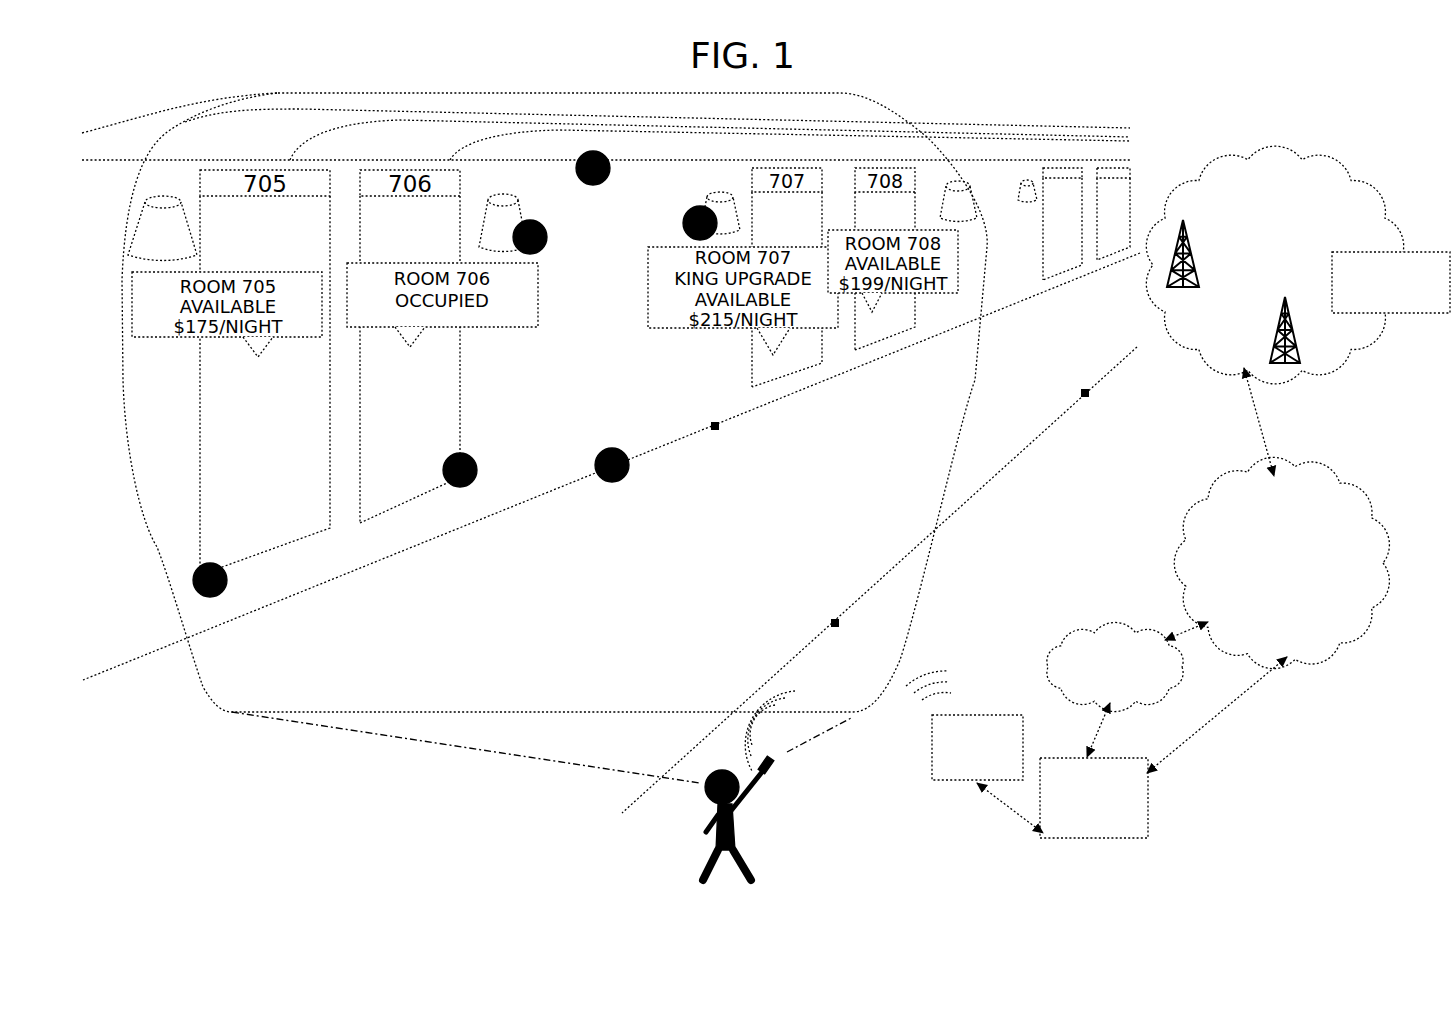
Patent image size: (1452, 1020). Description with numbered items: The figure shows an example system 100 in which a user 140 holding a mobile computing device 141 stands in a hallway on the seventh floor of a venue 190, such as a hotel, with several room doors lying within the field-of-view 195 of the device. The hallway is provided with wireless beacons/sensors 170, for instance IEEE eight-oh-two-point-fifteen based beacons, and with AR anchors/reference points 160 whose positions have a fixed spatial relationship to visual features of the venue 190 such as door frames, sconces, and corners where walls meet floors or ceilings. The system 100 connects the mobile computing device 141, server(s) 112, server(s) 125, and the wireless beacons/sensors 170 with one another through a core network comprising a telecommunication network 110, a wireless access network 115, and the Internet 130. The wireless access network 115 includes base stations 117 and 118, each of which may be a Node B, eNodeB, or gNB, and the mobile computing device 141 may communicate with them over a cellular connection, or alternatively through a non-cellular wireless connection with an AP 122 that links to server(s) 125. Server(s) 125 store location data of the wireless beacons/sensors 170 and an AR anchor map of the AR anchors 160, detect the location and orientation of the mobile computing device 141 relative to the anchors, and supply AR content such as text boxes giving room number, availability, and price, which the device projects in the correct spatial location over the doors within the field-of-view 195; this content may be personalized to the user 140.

The system 100 is at (200, 72).
The telecommunication network 110 is at (1268, 559).
The server(s) 112 is at (1377, 302).
The wireless access network 115 is at (1262, 253).
The base station 117 is at (1210, 270).
The base station 118 is at (1289, 366).
The AP 122 is at (963, 765).
The server(s) 125 is at (1079, 827).
The Internet 130 is at (1100, 688).
The user 140 is at (752, 868).
The mobile computing device 141 is at (778, 768).
The AR anchors/reference points 160 is at (610, 170).
The wireless beacons/sensors 170 is at (711, 426).
The venue 190 is at (341, 768).
The field-of-view 195 is at (200, 692).